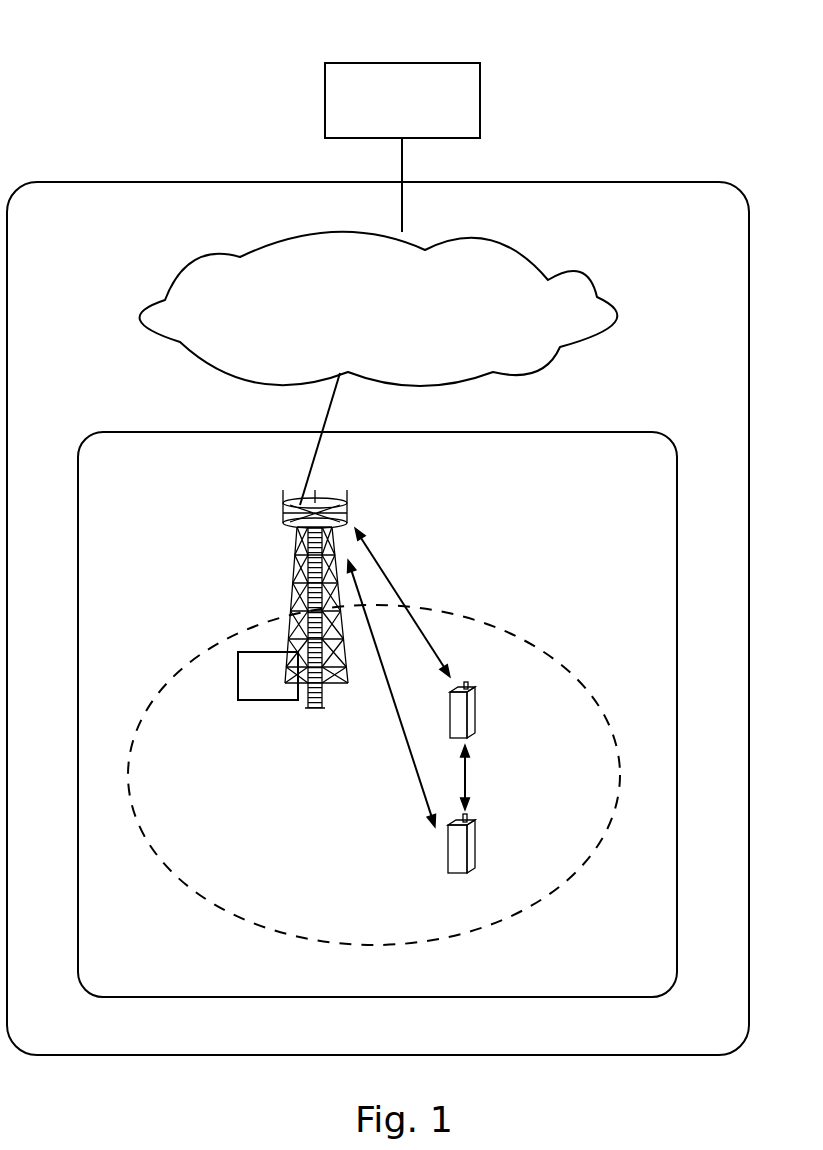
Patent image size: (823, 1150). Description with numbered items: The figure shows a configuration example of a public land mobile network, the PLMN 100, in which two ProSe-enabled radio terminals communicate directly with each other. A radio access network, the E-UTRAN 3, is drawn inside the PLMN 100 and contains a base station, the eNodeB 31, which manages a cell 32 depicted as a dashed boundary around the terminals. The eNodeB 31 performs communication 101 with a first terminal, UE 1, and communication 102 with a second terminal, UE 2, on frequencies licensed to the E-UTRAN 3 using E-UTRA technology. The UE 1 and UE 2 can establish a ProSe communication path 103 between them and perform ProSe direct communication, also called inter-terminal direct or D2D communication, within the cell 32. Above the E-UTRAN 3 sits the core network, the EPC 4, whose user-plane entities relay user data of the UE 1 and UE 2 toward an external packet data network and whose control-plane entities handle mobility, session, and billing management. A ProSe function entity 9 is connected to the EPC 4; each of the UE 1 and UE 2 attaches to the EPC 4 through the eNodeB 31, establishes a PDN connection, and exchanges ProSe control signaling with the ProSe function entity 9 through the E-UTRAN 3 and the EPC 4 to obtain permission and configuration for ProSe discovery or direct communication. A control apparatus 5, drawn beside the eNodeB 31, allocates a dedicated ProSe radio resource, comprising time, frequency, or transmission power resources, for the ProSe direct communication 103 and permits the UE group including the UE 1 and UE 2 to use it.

The PLMN 100 is at (98, 182).
The ProSe function entity 9 is at (420, 63).
The core network (EPC) 4 is at (598, 295).
The radio access network (E-UTRAN) 3 is at (605, 432).
The eNodeB 31 is at (297, 560).
The cell 32 is at (520, 633).
The control apparatus 5 is at (257, 702).
The UE 1 is at (450, 722).
The UE 2 is at (448, 857).
The communication 101 is at (387, 570).
The communication 102 is at (390, 693).
The ProSe communication path 103 is at (499, 813).